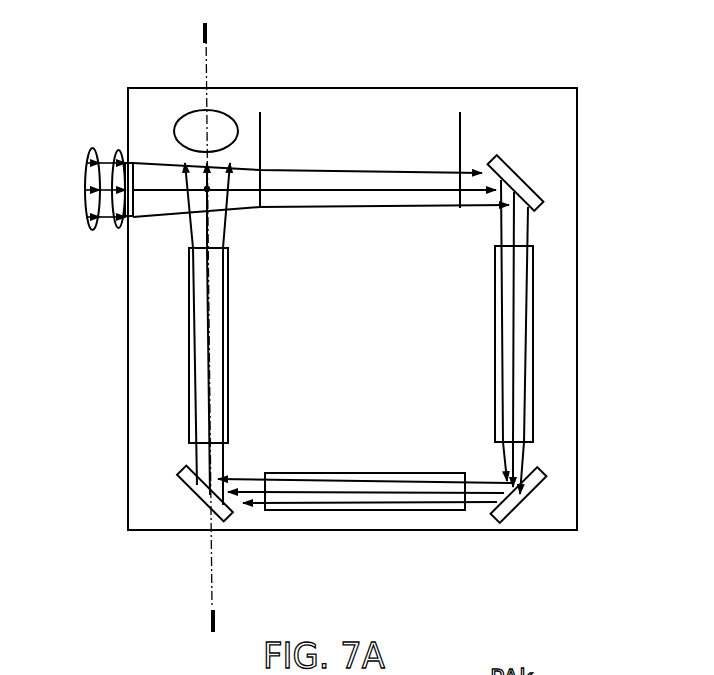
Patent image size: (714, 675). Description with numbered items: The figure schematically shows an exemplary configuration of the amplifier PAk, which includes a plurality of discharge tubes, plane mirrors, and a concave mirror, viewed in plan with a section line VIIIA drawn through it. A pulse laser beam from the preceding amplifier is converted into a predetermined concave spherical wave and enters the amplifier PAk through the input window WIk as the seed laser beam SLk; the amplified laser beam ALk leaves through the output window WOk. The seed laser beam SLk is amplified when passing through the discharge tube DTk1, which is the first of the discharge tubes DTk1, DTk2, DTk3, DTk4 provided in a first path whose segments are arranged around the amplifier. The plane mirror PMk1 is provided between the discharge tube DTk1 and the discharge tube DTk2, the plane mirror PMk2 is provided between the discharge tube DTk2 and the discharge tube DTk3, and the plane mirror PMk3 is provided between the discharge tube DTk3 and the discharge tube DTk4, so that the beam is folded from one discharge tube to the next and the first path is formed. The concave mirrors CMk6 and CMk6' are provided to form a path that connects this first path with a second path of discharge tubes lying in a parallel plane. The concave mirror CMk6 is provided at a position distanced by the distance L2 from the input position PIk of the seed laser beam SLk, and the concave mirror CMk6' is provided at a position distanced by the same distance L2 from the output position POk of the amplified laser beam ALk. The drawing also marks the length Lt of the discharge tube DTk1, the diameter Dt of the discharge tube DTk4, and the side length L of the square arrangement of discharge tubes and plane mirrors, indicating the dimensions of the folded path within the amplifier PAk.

The amplifier PAk is at (506, 80).
The section line VIIIA is at (199, 31).
The input window WIk is at (81, 182).
The output window WOk is at (81, 182).
The amplified laser beam ALk is at (88, 232).
The seed laser beam SLk is at (118, 230).
The discharge tube DTk1 is at (321, 181).
The discharge tube DTk2 is at (495, 338).
The discharge tube DTk3 is at (367, 472).
The discharge tube DTk4 is at (239, 334).
The plane mirror PMk1 is at (530, 181).
The plane mirror PMk2 is at (522, 500).
The plane mirror PMk3 is at (202, 497).
The concave mirror CMk6 is at (273, 96).
The concave mirror CMk6' is at (273, 96).
The input position PIk is at (281, 217).
The output position POk is at (207, 189).
The length Lt is at (460, 123).
The length L is at (532, 188).
The distance L2 is at (174, 129).
The diameter Dt is at (153, 280).